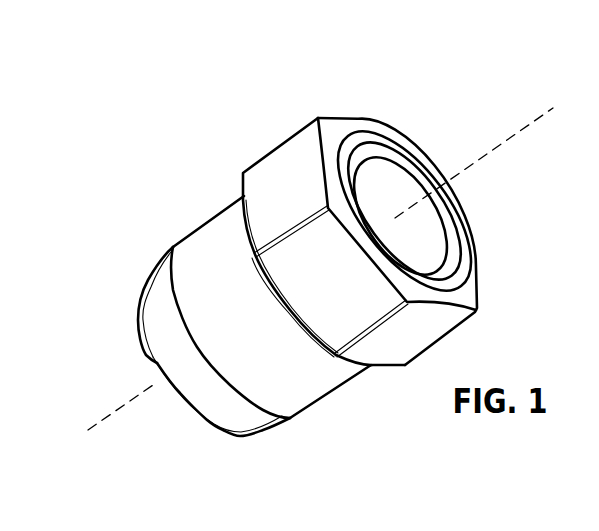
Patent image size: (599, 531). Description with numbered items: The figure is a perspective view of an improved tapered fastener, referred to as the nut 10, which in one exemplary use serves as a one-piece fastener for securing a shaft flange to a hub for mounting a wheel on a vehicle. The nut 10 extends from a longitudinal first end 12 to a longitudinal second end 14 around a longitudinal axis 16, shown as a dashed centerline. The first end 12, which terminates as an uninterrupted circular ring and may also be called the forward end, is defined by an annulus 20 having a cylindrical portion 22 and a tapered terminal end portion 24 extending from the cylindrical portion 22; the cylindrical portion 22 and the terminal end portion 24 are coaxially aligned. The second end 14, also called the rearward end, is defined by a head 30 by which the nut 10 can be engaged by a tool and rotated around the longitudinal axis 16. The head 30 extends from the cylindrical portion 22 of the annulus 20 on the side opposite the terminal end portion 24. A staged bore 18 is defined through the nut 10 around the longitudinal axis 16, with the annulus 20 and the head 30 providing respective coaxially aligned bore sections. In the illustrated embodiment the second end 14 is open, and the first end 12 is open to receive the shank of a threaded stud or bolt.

The nut 10 is at (184, 146).
The first end 12 is at (115, 362).
The second end 14 is at (400, 94).
The longitudinal axis 16 is at (508, 138).
The staged bore 18 is at (432, 242).
The annulus 20 is at (296, 456).
The cylindrical portion 22 is at (323, 375).
The tapered terminal end portion 24 is at (223, 413).
The head 30 is at (388, 345).